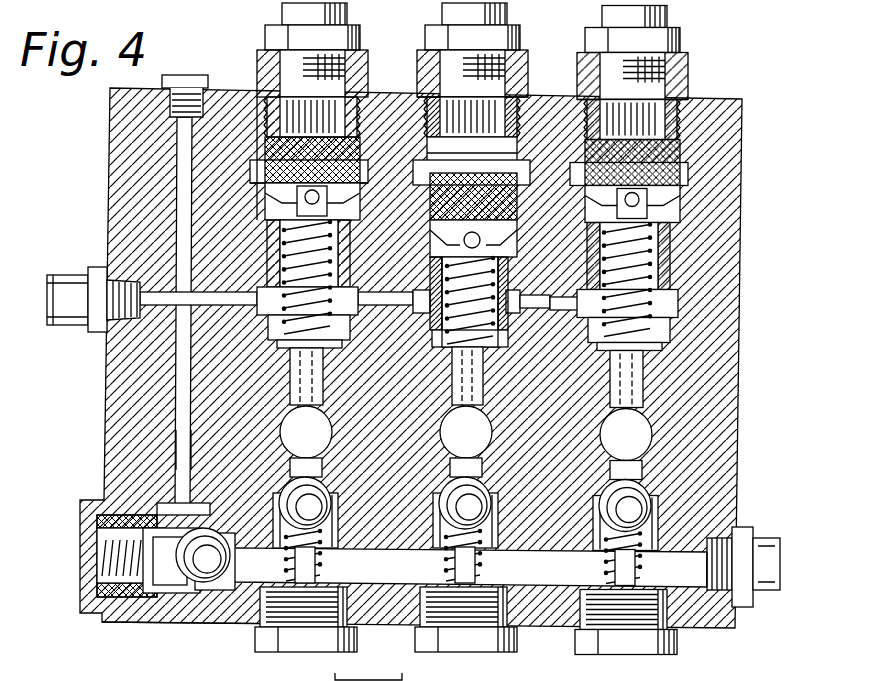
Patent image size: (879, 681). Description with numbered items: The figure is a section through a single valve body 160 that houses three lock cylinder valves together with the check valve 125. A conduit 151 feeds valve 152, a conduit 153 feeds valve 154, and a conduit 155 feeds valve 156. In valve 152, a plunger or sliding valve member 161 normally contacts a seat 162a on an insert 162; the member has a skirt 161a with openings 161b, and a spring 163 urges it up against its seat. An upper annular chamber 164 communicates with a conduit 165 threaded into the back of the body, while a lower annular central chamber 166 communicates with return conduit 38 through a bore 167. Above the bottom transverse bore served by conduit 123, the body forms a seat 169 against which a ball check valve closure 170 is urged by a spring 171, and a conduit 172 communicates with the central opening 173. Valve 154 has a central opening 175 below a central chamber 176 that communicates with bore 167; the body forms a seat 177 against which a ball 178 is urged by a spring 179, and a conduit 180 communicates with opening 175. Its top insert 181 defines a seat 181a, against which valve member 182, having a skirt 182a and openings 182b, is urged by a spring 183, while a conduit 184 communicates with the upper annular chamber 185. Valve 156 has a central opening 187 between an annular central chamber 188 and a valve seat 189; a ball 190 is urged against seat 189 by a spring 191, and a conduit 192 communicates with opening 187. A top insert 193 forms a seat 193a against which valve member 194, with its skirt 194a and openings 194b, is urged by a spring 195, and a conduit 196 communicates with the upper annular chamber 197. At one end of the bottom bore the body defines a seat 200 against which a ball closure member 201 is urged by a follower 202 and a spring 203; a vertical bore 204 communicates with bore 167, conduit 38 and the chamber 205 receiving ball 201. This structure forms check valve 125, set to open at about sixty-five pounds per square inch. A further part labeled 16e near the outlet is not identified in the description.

The valve body 160 is at (108, 172).
The lock cylinder valve 156 is at (243, 75).
The conduit 155 is at (347, 15).
The top insert 193 is at (337, 61).
The seat 193a is at (347, 100).
The conduit 153 is at (505, 15).
The top insert 181 is at (496, 61).
The lock cylinder valve 154 is at (498, 72).
The seat 181a is at (511, 117).
The conduit 151 is at (669, 16).
The insert 162 is at (658, 63).
The lock cylinder valve 152 is at (687, 60).
The seat 162a is at (679, 105).
The plunger or sliding valve member 161 is at (693, 202).
The upper annular chamber 164 is at (693, 161).
The conduit 165 is at (686, 173).
The openings 161b is at (697, 204).
The upper annular chamber 185 is at (340, 158).
The valve member 194 is at (281, 210).
The upper annular chamber 197 is at (287, 169).
The conduit 196 is at (289, 193).
The conduit 184 is at (340, 173).
The openings 194b is at (345, 209).
The spring 195 is at (351, 278).
The skirt 194a is at (344, 302).
The valve member 182 is at (490, 178).
The openings 182b is at (505, 238).
The spring 183 is at (505, 296).
The skirt 182a is at (511, 302).
The bore 167 is at (245, 265).
The return conduit 38 is at (67, 287).
The annular central chamber 188 is at (336, 318).
The central opening 187 is at (353, 376).
The central chamber 176 is at (501, 311).
The central opening 175 is at (506, 376).
The skirt 161a is at (693, 282).
The lower annular central chamber 166 is at (692, 318).
The spring 163 is at (699, 285).
The central opening 173 is at (702, 379).
The conduit 172 is at (699, 431).
The conduit 192 is at (209, 311).
The vertical bore 204 is at (177, 437).
The chamber 205 is at (170, 503).
The ball closure member 201 is at (80, 550).
The spring 203 is at (82, 563).
The conduit 180 is at (348, 442).
The valve seat 189 is at (345, 511).
The ball 190 is at (348, 503).
The spring 191 is at (350, 547).
The seat 177 is at (504, 452).
The ball 178 is at (500, 503).
The spring 179 is at (504, 548).
The seat 169 is at (692, 507).
The ball check valve closure 170 is at (696, 506).
The conduit 123 is at (777, 543).
The check valve 125 is at (140, 624).
The follower 202 is at (177, 593).
The seat 200 is at (230, 583).
The spring 171 is at (626, 630).
The outlet port 16e is at (702, 583).